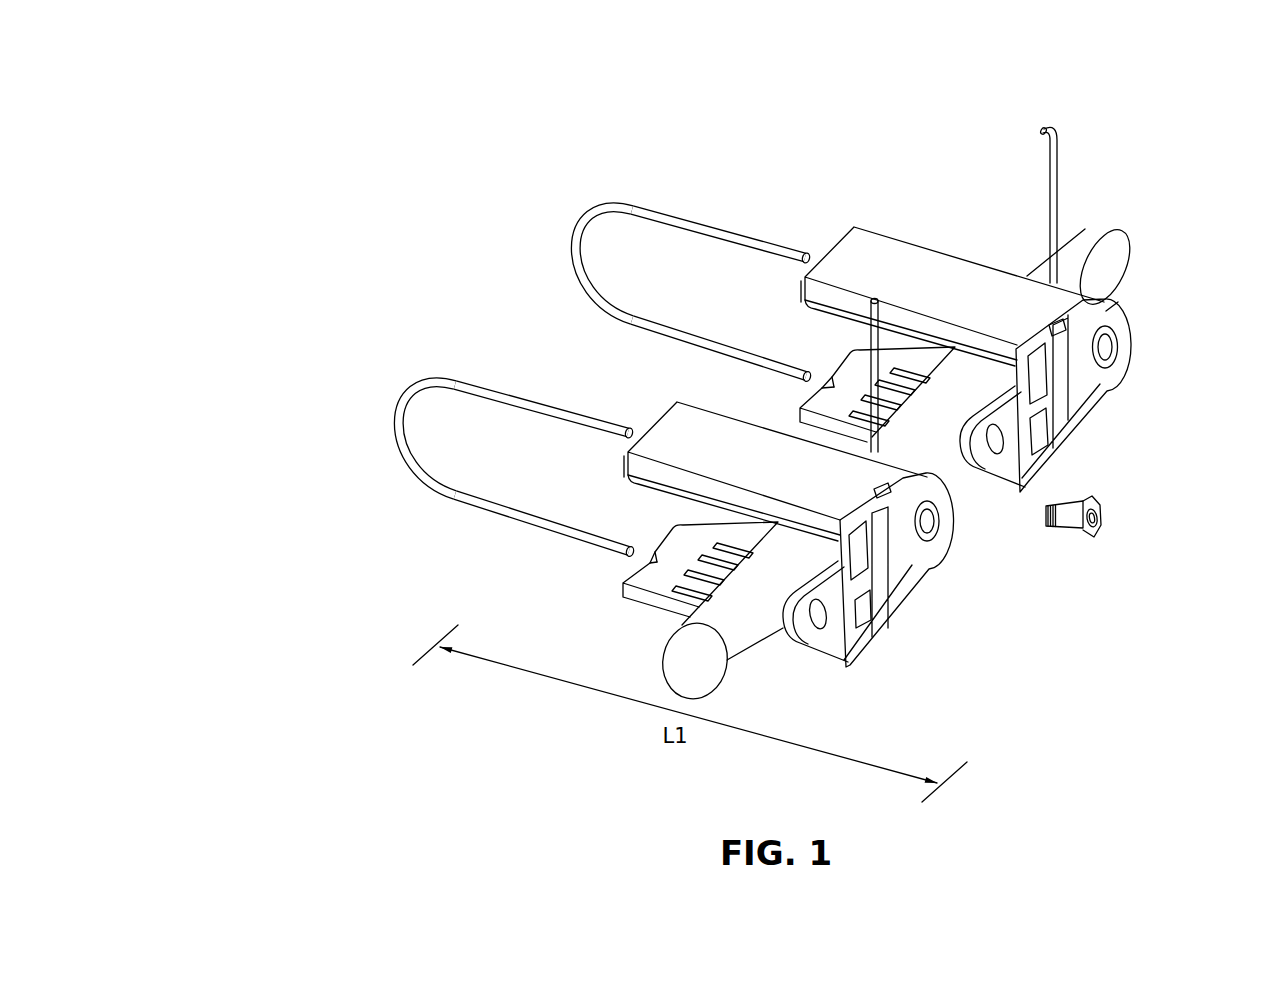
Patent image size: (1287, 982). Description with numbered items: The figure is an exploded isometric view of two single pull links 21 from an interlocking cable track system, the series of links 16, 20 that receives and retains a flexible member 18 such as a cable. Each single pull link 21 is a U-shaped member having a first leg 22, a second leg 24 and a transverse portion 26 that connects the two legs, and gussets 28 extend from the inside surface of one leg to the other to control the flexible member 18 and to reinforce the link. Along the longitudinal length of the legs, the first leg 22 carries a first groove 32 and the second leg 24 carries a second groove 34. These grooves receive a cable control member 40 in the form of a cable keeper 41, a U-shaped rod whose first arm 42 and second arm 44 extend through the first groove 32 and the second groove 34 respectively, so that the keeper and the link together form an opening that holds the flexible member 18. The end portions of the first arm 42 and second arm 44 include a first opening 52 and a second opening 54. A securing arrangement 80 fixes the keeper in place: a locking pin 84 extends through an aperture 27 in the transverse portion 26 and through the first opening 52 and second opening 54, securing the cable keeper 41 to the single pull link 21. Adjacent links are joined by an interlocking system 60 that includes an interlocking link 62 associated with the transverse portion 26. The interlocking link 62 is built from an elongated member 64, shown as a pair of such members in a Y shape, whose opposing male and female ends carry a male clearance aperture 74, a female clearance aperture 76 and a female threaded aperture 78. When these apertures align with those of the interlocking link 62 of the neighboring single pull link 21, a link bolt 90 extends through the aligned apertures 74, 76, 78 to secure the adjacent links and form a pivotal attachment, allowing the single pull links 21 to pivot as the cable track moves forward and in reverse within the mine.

The series of links 16 is at (547, 150).
The clamp 20 is at (776, 395).
The flexible member 18 is at (757, 632).
The single pull link 21 is at (1025, 453).
The first leg 22 is at (820, 354).
The second leg 24 is at (795, 485).
The transverse portion 26 is at (1025, 453).
The aperture 27 is at (886, 500).
The gussets 28 is at (662, 600).
The first groove 32 is at (653, 495).
The second groove 34 is at (680, 560).
The cable control member 40 is at (558, 336).
The cable keeper 41 is at (445, 379).
The first arm 42 is at (643, 287).
The second arm 44 is at (633, 444).
The first opening 52 is at (803, 252).
The second opening 54 is at (797, 370).
The interlocking system 60 is at (1085, 573).
The interlocking link 62 is at (959, 547).
The elongated member 64 is at (821, 609).
The male clearance aperture 74 is at (834, 605).
The female clearance aperture 76 is at (932, 518).
The female threaded aperture 78 is at (1091, 432).
The securing arrangement 80 is at (1165, 165).
The locking pin 84 is at (1058, 190).
The link bolt 90 is at (1096, 505).